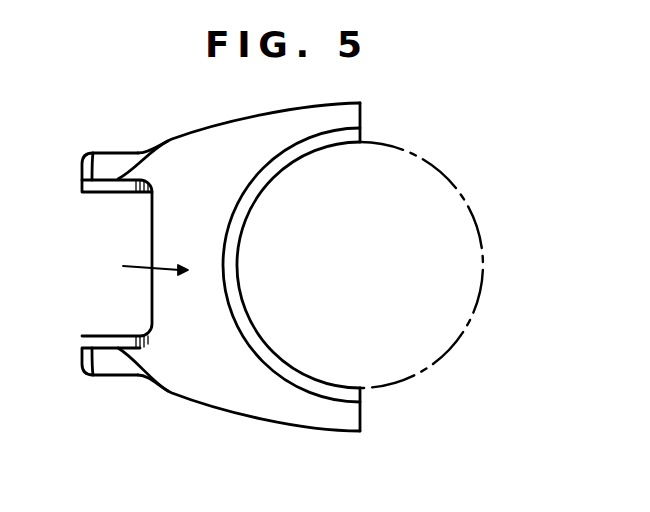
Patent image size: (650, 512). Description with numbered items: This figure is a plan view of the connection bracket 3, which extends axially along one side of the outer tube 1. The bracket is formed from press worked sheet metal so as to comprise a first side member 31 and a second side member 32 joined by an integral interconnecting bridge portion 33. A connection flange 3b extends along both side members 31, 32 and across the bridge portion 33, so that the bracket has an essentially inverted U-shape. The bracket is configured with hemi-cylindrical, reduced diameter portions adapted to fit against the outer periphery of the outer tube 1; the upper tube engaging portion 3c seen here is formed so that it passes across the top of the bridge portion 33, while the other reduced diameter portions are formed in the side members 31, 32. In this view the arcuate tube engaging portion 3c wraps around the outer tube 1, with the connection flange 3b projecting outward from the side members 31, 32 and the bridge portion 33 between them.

The outer tube 1 is at (478, 268).
The connection bracket 3 is at (362, 122).
The connection flange 3b is at (97, 193).
The upper tube engaging portion 3c is at (285, 367).
The first side member 31 is at (164, 141).
The second side member 32 is at (188, 395).
The bridge portion 33 is at (140, 270).